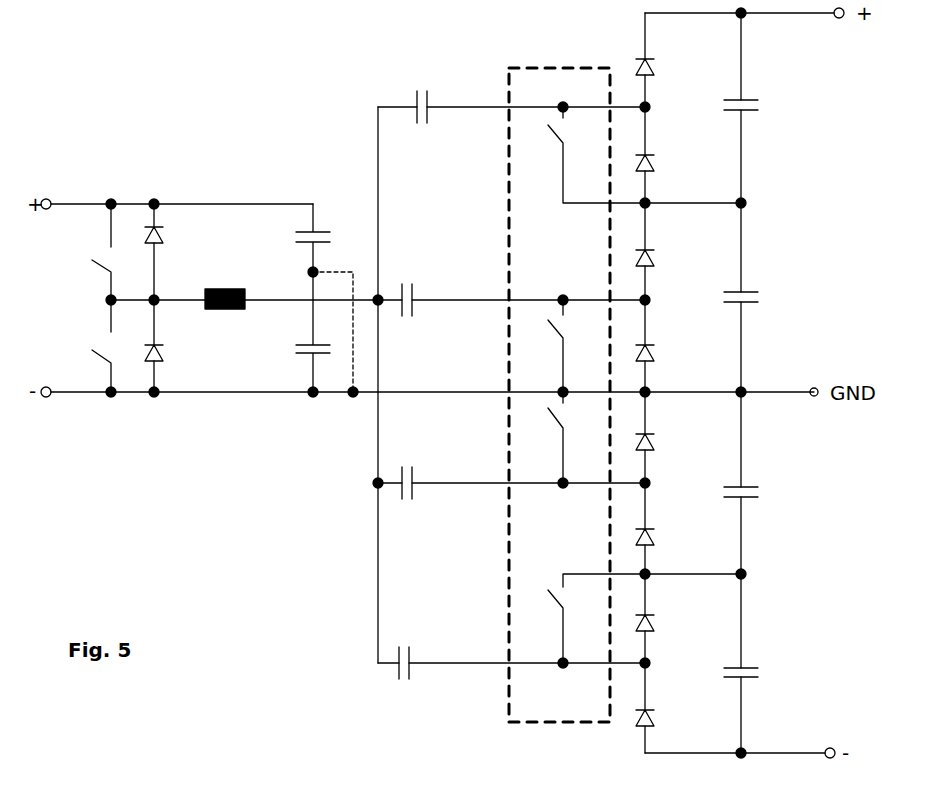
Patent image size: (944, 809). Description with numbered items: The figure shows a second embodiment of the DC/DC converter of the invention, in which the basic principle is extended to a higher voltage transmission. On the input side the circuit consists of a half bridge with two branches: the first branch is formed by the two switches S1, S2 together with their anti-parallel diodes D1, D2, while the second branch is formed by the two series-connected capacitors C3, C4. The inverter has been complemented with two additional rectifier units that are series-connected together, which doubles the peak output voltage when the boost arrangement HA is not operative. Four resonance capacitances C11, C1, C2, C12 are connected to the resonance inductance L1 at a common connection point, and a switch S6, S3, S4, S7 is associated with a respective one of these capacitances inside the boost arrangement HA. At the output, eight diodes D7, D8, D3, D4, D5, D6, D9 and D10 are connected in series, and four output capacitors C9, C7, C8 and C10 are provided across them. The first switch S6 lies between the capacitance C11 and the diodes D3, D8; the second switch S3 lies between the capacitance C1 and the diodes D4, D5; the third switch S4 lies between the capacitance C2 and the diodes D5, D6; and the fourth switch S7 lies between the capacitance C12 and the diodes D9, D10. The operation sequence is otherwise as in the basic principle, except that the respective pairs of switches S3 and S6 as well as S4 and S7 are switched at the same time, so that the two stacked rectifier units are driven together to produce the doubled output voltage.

The switch S1 is at (93, 252).
The switch S2 is at (90, 346).
The anti-parallel diode D1 is at (173, 252).
The anti-parallel diode D2 is at (173, 346).
The resonance inductance L1 is at (225, 284).
The capacitor C3 is at (328, 238).
The capacitor C4 is at (296, 332).
The resonance capacitance C11 is at (442, 86).
The resonance capacitance C1 is at (425, 291).
The resonance capacitance C2 is at (422, 471).
The resonance capacitance C12 is at (429, 654).
The boost arrangement HA is at (559, 381).
The first switch S6 is at (631, 155).
The second switch S3 is at (542, 346).
The switch S4 is at (542, 437).
The fourth switch S7 is at (630, 618).
The diode D7 is at (663, 72).
The diode D8 is at (662, 165).
The diode D3 is at (663, 262).
The diode D4 is at (662, 356).
The diode D5 is at (663, 446).
The diode D6 is at (663, 541).
The diode D9 is at (663, 626).
The diode D10 is at (670, 721).
The output capacitor C9 is at (759, 116).
The output capacitor C7 is at (759, 307).
The output capacitor C8 is at (761, 504).
The output capacitor C10 is at (767, 685).